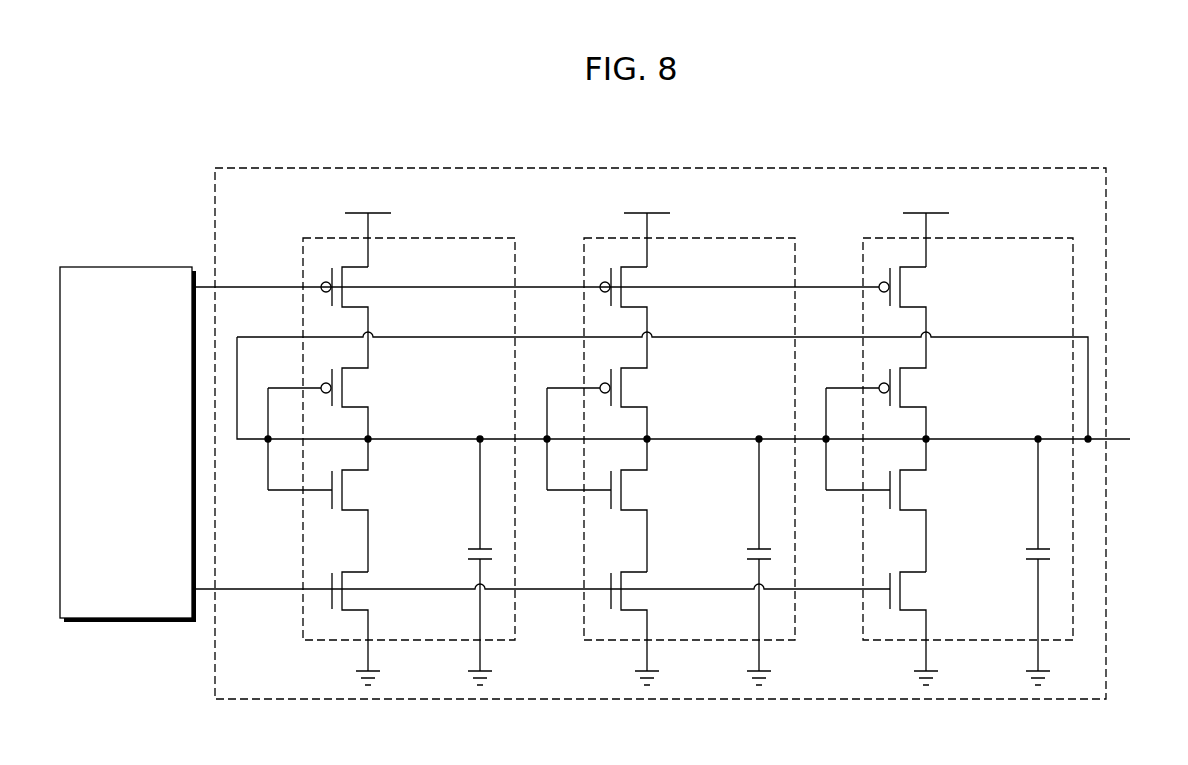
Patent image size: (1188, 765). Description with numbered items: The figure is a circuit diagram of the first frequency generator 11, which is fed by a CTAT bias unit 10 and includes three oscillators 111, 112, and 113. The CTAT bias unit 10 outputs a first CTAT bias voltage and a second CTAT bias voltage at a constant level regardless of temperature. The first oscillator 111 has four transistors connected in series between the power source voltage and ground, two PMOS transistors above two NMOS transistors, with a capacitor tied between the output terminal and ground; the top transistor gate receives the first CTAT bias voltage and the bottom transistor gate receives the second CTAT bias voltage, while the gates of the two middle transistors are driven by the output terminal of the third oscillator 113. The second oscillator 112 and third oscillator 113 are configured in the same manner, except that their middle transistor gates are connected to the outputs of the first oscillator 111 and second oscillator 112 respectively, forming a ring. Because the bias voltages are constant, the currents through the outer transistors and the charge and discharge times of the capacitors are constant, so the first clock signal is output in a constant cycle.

The CTAT bias unit 10 is at (153, 267).
The first frequency generator 11 is at (568, 168).
The first oscillator 111 is at (456, 238).
The second oscillator 112 is at (741, 238).
The third oscillator 113 is at (1019, 238).